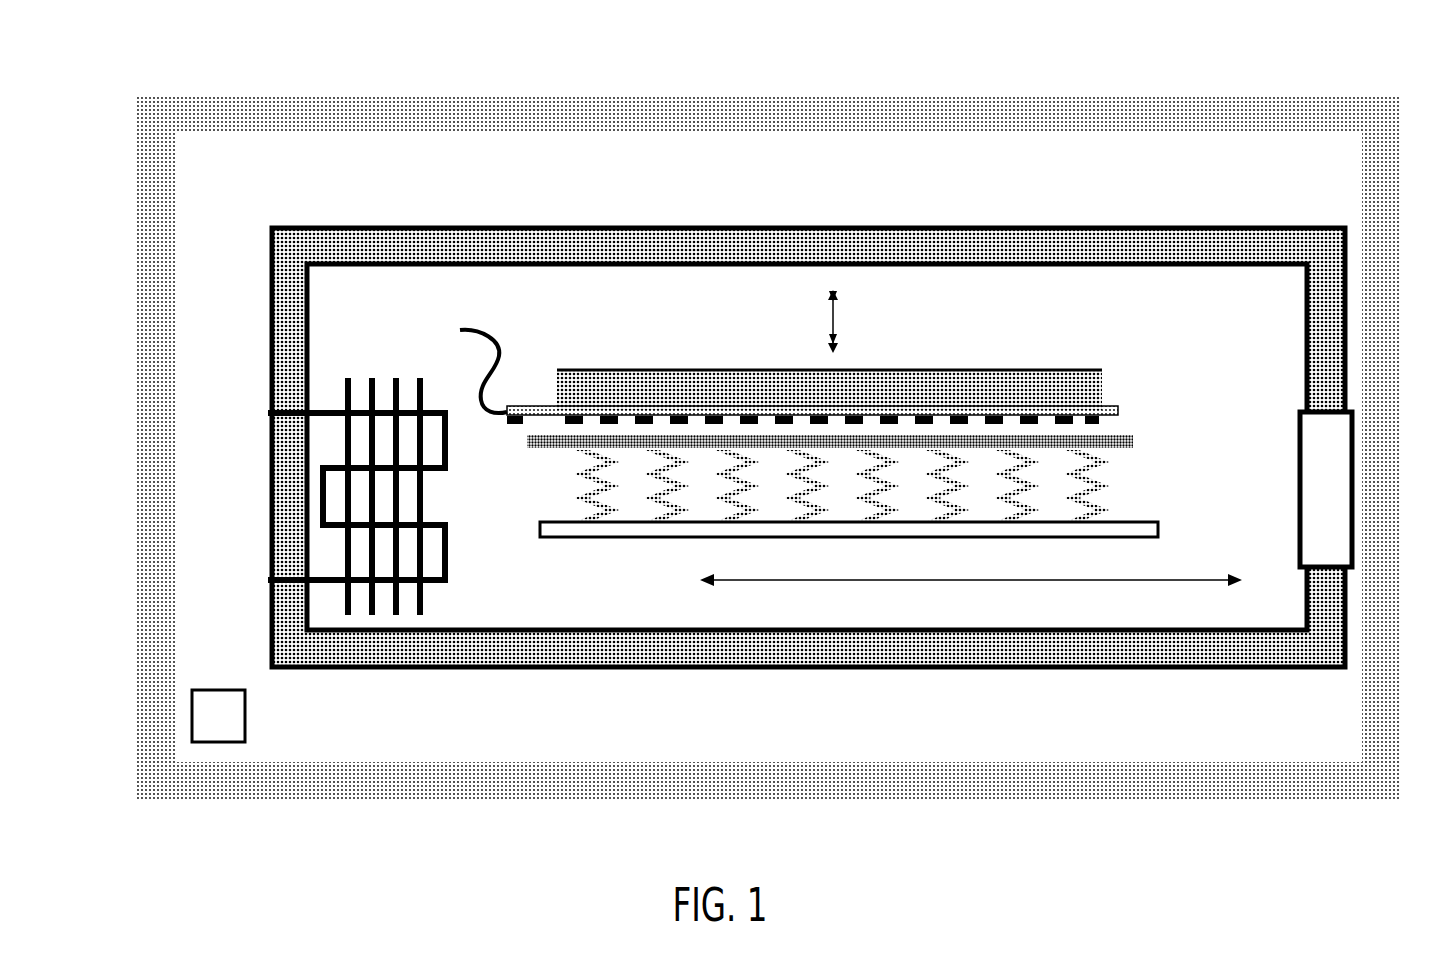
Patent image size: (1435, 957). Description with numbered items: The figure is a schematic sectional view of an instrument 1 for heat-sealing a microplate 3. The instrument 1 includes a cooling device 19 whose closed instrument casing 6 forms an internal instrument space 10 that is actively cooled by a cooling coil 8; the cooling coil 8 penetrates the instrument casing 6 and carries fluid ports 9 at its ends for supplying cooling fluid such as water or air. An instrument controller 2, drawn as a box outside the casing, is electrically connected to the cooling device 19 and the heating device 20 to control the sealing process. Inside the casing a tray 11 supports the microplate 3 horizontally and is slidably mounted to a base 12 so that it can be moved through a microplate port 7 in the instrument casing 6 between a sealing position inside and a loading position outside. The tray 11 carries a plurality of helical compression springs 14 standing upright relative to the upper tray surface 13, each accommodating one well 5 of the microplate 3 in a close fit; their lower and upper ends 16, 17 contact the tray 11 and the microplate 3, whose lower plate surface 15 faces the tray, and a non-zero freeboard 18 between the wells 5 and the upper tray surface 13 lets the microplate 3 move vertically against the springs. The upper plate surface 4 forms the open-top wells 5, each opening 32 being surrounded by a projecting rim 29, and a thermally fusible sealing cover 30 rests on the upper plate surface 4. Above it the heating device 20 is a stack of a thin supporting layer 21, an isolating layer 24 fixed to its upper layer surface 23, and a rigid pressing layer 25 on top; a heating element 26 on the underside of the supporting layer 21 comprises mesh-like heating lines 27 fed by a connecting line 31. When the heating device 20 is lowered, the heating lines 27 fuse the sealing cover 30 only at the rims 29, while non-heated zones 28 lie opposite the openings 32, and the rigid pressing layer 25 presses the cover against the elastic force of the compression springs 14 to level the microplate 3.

The instrument 1 is at (406, 93).
The instrument controller 2 is at (208, 732).
The microplate 3 is at (1005, 433).
The upper plate surface 4 is at (1125, 433).
The well 5 is at (1090, 459).
The instrument casing 6 is at (403, 243).
The microplate port 7 is at (1340, 437).
The cooling coil 8 is at (440, 583).
The fluid port 9 is at (268, 580).
The instrument space 10 is at (1204, 323).
The tray 11 is at (590, 523).
The base 12 is at (840, 645).
The upper tray surface 13 is at (1142, 519).
The compression spring 14 is at (1000, 480).
The lower plate surface 15 is at (548, 450).
The lower end 16 is at (660, 512).
The upper end 17 is at (948, 420).
The freeboard 18 is at (583, 495).
The cooling device 19 is at (807, 438).
The heating device 20 is at (590, 362).
The supporting layer 21 is at (1113, 403).
The upper layer surface 23 is at (547, 405).
The isolating layer 24 is at (637, 410).
The pressing layer 25 is at (705, 393).
The heating element 26 is at (847, 424).
The heating line 27 is at (884, 424).
The non-heated zone 28 is at (728, 426).
The rim 29 is at (950, 450).
The sealing cover 30 is at (1062, 433).
The connecting line 31 is at (477, 325).
The opening 32 is at (793, 440).